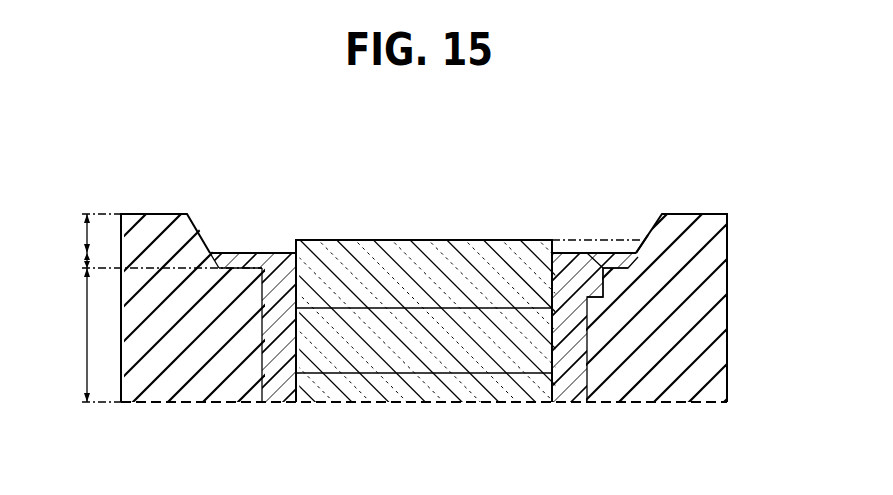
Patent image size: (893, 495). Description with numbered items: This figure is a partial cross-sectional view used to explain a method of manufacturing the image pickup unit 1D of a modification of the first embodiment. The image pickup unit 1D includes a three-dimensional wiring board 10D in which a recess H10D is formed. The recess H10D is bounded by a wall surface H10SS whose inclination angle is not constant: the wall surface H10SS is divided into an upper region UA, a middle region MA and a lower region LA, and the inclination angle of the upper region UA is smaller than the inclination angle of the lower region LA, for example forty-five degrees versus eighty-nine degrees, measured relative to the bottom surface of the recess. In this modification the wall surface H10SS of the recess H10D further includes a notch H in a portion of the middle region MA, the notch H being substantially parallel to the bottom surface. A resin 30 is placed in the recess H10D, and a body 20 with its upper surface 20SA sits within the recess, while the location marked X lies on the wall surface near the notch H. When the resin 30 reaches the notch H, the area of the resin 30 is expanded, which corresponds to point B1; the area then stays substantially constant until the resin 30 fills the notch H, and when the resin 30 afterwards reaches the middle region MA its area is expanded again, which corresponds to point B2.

The image pickup unit 1D is at (446, 247).
The three-dimensional wiring board 10D is at (706, 214).
The recess H10D is at (483, 180).
The wall surface H10SS is at (267, 345).
The conductor / filling member 20 is at (415, 247).
The upper surface of filling member 20SA is at (370, 237).
The resin 30 is at (446, 247).
The notch H is at (585, 295).
The point B1 is at (596, 261).
The point B2 is at (603, 267).
The point X on slope X is at (645, 240).
The upper region UA is at (79, 233).
The middle region MA is at (149, 267).
The lower region LA is at (80, 335).